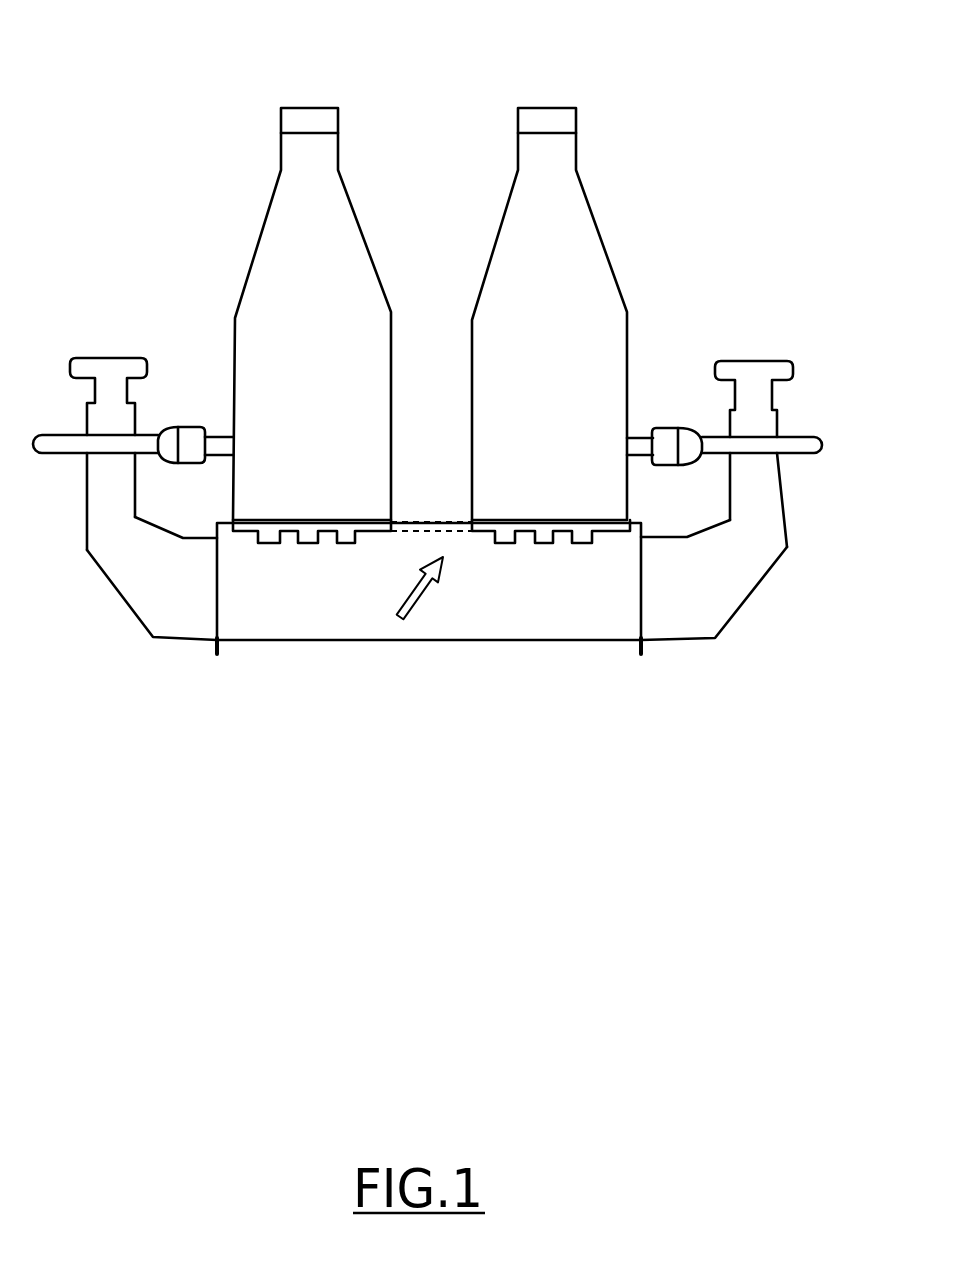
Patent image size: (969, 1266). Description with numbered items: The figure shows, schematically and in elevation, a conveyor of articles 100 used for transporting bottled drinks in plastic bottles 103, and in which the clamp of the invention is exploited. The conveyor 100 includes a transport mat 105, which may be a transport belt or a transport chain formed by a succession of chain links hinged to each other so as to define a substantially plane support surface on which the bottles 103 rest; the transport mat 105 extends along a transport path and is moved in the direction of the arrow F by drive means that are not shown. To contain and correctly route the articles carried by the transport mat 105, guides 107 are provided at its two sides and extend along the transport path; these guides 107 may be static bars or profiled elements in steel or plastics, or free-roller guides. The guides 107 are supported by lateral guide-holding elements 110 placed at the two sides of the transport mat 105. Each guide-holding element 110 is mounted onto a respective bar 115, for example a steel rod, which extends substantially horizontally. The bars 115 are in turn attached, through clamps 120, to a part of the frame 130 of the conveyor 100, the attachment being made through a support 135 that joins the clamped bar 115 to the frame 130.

The conveyor of articles 100 is at (168, 78).
The plastic bottle 103 is at (356, 207).
The transport mat 105 is at (421, 520).
The guide 107 is at (636, 436).
The guide-holding element 110 is at (683, 427).
The bar 115 is at (821, 441).
The clamp 120 is at (112, 350).
The frame 130 is at (641, 588).
The support 135 is at (778, 545).